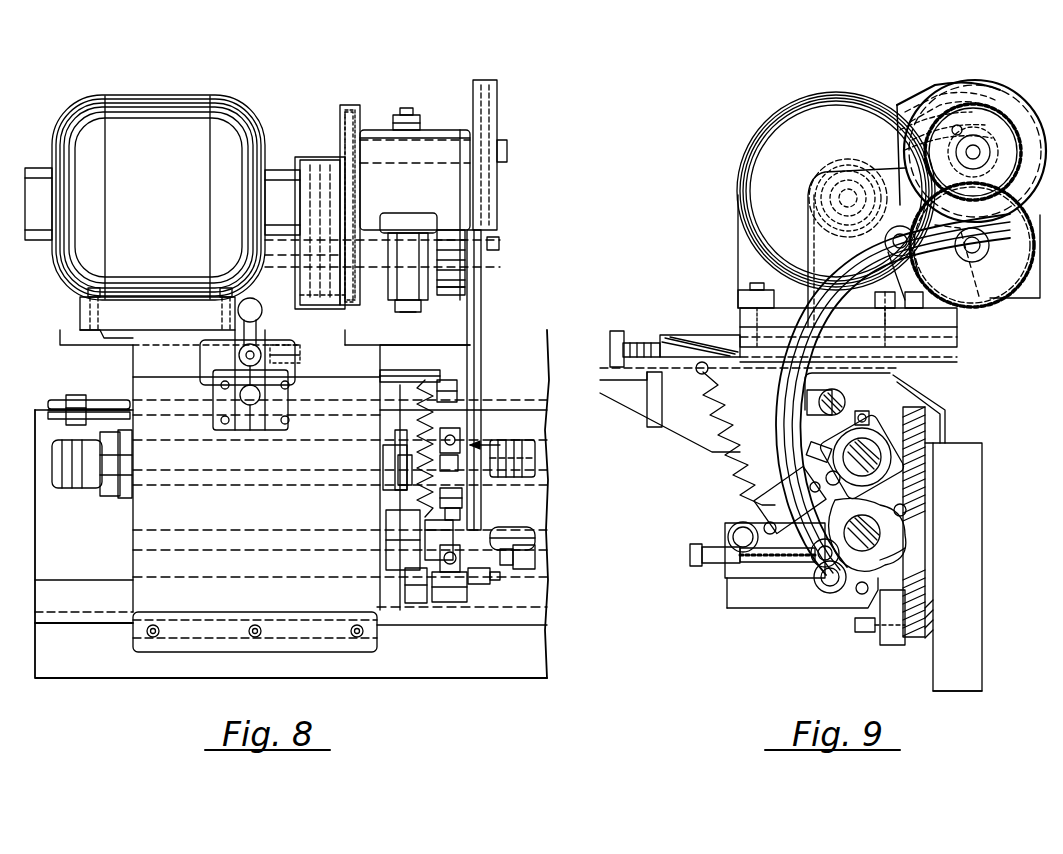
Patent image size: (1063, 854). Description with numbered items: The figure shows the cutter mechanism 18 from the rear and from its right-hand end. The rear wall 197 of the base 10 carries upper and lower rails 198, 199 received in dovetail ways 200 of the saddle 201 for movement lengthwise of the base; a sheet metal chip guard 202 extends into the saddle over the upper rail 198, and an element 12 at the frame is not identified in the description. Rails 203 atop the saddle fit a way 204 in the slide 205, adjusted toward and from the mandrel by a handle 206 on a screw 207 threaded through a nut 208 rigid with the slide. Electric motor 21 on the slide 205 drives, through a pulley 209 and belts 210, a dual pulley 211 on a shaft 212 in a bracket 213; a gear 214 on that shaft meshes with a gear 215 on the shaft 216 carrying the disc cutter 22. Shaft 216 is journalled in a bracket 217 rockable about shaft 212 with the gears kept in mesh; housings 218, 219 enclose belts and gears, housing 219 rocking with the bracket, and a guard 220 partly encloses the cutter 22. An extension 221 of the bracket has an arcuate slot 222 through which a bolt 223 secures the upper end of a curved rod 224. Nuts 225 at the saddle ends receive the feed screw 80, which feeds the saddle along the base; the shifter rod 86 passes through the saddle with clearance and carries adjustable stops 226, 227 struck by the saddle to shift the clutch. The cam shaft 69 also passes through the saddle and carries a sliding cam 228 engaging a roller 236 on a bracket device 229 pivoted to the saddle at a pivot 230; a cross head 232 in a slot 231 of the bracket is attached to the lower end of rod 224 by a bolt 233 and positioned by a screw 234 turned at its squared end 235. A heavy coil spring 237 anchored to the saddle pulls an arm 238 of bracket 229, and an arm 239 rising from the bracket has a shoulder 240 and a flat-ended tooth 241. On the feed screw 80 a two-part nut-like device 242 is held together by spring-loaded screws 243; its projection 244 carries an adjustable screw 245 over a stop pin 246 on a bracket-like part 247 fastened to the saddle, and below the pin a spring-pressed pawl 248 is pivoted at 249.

In FIG. 8, the base 10 is at (103, 682).
In FIG. 9, the base 10 is at (984, 662).
In FIG. 9, the frame wall 12 is at (975, 440).
In FIG. 8, the cutter mechanism 18 is at (510, 100).
In FIG. 9, the cutter mechanism 18 is at (716, 318).
In FIG. 8, the electric motor 21 is at (160, 100).
In FIG. 9, the electric motor 21 is at (774, 128).
In FIG. 8, the disc cutter 22 is at (490, 200).
In FIG. 9, the disc cutter 22 is at (985, 140).
In FIG. 8, the cam shaft 69 is at (535, 535).
In FIG. 9, the cam shaft 69 is at (867, 546).
In FIG. 8, the feed screw 80 is at (535, 468).
In FIG. 9, the feed screw 80 is at (872, 440).
In FIG. 8, the shifter rod 86 is at (60, 400).
In FIG. 9, the shifter rod 86 is at (834, 396).
In FIG. 8, the rear wall 197 is at (312, 678).
In FIG. 9, the rear wall 197 is at (940, 690).
In FIG. 8, the upper horizontal rail 198 is at (40, 432).
In FIG. 9, the upper horizontal rail 198 is at (945, 443).
In FIG. 8, the lower horizontal rail 199 is at (45, 596).
In FIG. 9, the lower horizontal rail 199 is at (933, 600).
In FIG. 8, the dovetail ways 200 is at (206, 620).
In FIG. 9, the dovetail ways 200 is at (885, 645).
In FIG. 8, the saddle 201 is at (125, 592).
In FIG. 9, the saddle 201 is at (723, 615).
In FIG. 9, the dust or chip guard 202 is at (945, 415).
In FIG. 8, the rails 203 is at (175, 345).
In FIG. 9, the rails 203 is at (672, 330).
In FIG. 8, the way 204 is at (355, 348).
In FIG. 9, the way 204 is at (856, 338).
In FIG. 8, the slide 205 is at (78, 330).
In FIG. 9, the slide 205 is at (720, 310).
In FIG. 8, the handle 206 is at (250, 405).
In FIG. 9, the screw 207 is at (645, 343).
In FIG. 8, the nut 208 is at (300, 357).
In FIG. 9, the nut 208 is at (772, 355).
In FIG. 8, the pulley 209 is at (315, 172).
In FIG. 9, the pulley 209 is at (832, 185).
In FIG. 8, the belts 210 is at (308, 240).
In FIG. 9, the belts 210 is at (868, 165).
In FIG. 8, the dual pulley 211 is at (310, 280).
In FIG. 9, the dual pulley 211 is at (975, 300).
In FIG. 8, the shaft 212 is at (306, 266).
In FIG. 9, the shaft 212 is at (990, 305).
In FIG. 8, the bracket 213 is at (405, 230).
In FIG. 9, the bracket 213 is at (1000, 300).
In FIG. 8, the gear 214 is at (312, 296).
In FIG. 9, the gear 214 is at (1020, 290).
In FIG. 8, the gear 215 is at (345, 120).
In FIG. 9, the gear 215 is at (945, 105).
In FIG. 8, the shaft 216 is at (370, 150).
In FIG. 9, the shaft 216 is at (990, 140).
In FIG. 8, the bracket 217 is at (430, 130).
In FIG. 9, the bracket 217 is at (925, 100).
In FIG. 8, the housing 218 is at (300, 155).
In FIG. 9, the housing 218 is at (808, 198).
In FIG. 8, the housing 219 is at (355, 105).
In FIG. 9, the housing 219 is at (955, 100).
In FIG. 8, the guard 220 is at (485, 80).
In FIG. 9, the guard 220 is at (905, 100).
In FIG. 8, the extension 221 is at (455, 295).
In FIG. 9, the extension 221 is at (894, 296).
In FIG. 8, the arcuate slot 222 is at (470, 278).
In FIG. 9, the arcuate slot 222 is at (912, 309).
In FIG. 8, the bolt 223 is at (500, 244).
In FIG. 9, the bolt 223 is at (885, 243).
In FIG. 8, the curved rod 224 is at (481, 305).
In FIG. 9, the curved rod 224 is at (850, 262).
In FIG. 8, the nuts 225 is at (105, 436).
In FIG. 9, the nuts 225 is at (888, 396).
In FIG. 8, the adjustable stop 226 is at (74, 395).
In FIG. 8, the adjustable stop 227 is at (447, 390).
In FIG. 9, the adjustable stop 227 is at (830, 385).
In FIG. 8, the cam 228 is at (420, 560).
In FIG. 9, the cam 228 is at (905, 560).
In FIG. 8, the bracket device 229 is at (452, 602).
In FIG. 9, the bracket device 229 is at (752, 590).
In FIG. 8, the pivot 230 is at (455, 525).
In FIG. 9, the pivot 230 is at (730, 530).
In FIG. 9, the slot 231 is at (785, 565).
In FIG. 8, the cross head 232 is at (490, 578).
In FIG. 9, the cross head 232 is at (820, 583).
In FIG. 8, the bolt 233 is at (536, 557).
In FIG. 9, the bolt 233 is at (822, 568).
In FIG. 9, the screw 234 is at (800, 565).
In FIG. 8, the squared outer end 235 is at (445, 602).
In FIG. 9, the squared outer end 235 is at (690, 554).
In FIG. 8, the roller 236 is at (416, 603).
In FIG. 9, the roller 236 is at (858, 625).
In FIG. 8, the coil spring 237 is at (380, 380).
In FIG. 9, the coil spring 237 is at (745, 468).
In FIG. 9, the arm 238 is at (760, 508).
In FIG. 8, the arm 239 is at (462, 512).
In FIG. 9, the arm 239 is at (780, 565).
In FIG. 8, the shoulder 240 is at (560, 494).
In FIG. 9, the shoulder 240 is at (745, 560).
In FIG. 8, the flat outer end 241 is at (465, 497).
In FIG. 9, the flat outer end 241 is at (775, 519).
In FIG. 8, the nut-like device 242 is at (500, 445).
In FIG. 9, the nut-like device 242 is at (890, 445).
In FIG. 8, the screws 243 is at (460, 433).
In FIG. 9, the screws 243 is at (934, 462).
In FIG. 8, the projection 244 is at (548, 435).
In FIG. 9, the projection 244 is at (810, 485).
In FIG. 8, the screw 245 is at (460, 460).
In FIG. 9, the screw 245 is at (812, 458).
In FIG. 8, the stop pin 246 is at (470, 470).
In FIG. 9, the stop pin 246 is at (826, 478).
In FIG. 8, the bracket-like part 247 is at (385, 470).
In FIG. 9, the bracket-like part 247 is at (790, 432).
In FIG. 9, the spring pressed pawl 248 is at (930, 528).
In FIG. 9, the pivot 249 is at (905, 490).